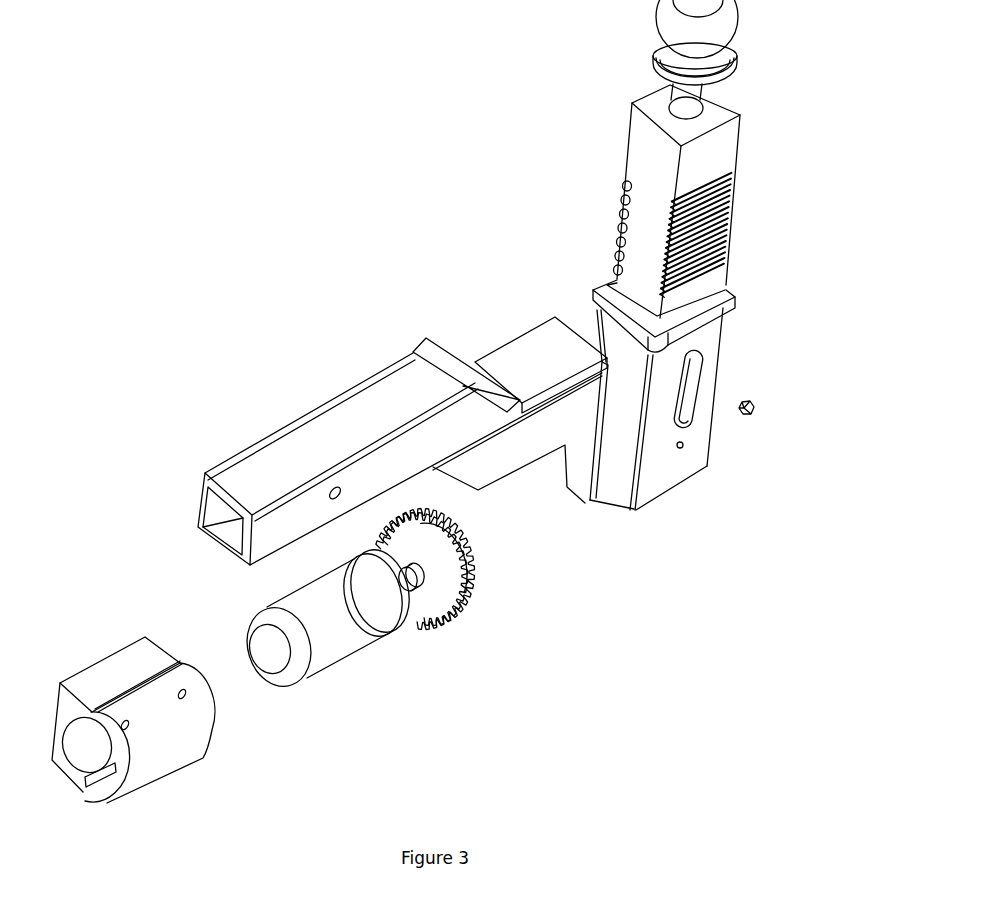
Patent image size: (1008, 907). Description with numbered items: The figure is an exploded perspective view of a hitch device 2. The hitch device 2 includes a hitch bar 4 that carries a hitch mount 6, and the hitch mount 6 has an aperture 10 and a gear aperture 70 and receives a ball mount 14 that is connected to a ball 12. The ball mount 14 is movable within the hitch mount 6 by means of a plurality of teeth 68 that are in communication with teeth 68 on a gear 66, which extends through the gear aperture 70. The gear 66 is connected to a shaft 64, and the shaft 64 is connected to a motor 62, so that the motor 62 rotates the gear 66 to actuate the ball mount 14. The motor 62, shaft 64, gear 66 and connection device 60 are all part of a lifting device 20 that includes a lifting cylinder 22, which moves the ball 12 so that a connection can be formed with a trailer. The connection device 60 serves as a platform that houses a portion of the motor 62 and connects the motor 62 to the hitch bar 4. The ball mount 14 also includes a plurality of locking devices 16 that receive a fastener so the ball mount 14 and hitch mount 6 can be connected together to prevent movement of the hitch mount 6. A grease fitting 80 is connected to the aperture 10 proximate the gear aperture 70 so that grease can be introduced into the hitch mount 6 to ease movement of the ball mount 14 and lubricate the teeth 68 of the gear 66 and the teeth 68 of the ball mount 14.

The hitch device 2 is at (189, 143).
The hitch bar 4 is at (203, 474).
The hitch mount 6 is at (722, 345).
The aperture 10 is at (689, 466).
The ball 12 is at (667, 22).
The ball mount 14 is at (632, 112).
The locking devices 16 is at (612, 230).
The lifting device 20 is at (608, 616).
The lifting cylinder 22 is at (388, 664).
The connection device 60 is at (234, 744).
The motor 62 is at (333, 608).
The shaft 64 is at (413, 597).
The gear 66 is at (440, 597).
The teeth 68 is at (745, 231).
The gear aperture 70 is at (688, 420).
The grease fitting 80 is at (757, 412).